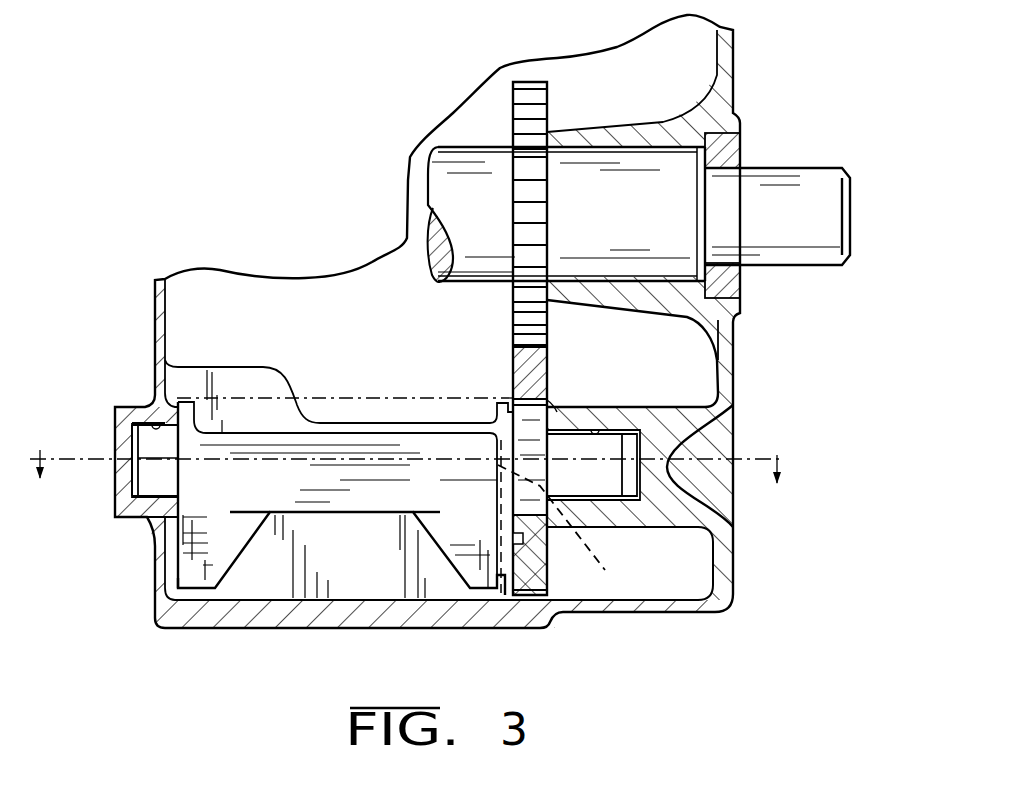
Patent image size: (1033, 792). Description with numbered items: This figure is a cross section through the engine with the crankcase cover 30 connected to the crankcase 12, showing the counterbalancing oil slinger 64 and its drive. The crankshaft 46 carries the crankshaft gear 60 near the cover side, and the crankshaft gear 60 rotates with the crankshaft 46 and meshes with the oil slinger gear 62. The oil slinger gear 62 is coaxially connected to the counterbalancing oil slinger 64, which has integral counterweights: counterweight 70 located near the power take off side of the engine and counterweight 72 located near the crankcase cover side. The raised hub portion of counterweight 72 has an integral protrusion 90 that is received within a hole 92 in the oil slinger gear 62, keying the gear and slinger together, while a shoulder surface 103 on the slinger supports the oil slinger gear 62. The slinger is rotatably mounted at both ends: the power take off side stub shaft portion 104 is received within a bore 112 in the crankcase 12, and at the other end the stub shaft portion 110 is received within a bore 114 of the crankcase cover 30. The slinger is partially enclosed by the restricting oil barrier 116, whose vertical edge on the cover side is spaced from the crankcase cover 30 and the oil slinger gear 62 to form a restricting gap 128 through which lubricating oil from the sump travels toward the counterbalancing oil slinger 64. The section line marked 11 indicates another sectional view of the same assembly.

The crankcase cover 30 is at (734, 550).
The crankcase 12 is at (154, 560).
The power take off side stub shaft portion 104 is at (153, 476).
The bore 112 is at (150, 422).
The restricting oil barrier 116 is at (353, 560).
The counterbalancing oil slinger 64 is at (271, 573).
The counterweight 72 is at (454, 580).
The counterweight 70 is at (175, 586).
The crankshaft gear 60 is at (523, 140).
The oil slinger gear 62 is at (518, 378).
The crankshaft 46 is at (624, 226).
The surface 103 is at (548, 410).
The stub shaft portion 110 is at (597, 482).
The bore 114 is at (597, 436).
The protrusion 90 is at (546, 568).
The hole 92 is at (524, 539).
The restricting gap 128 is at (572, 526).
The section line 11 is at (412, 476).